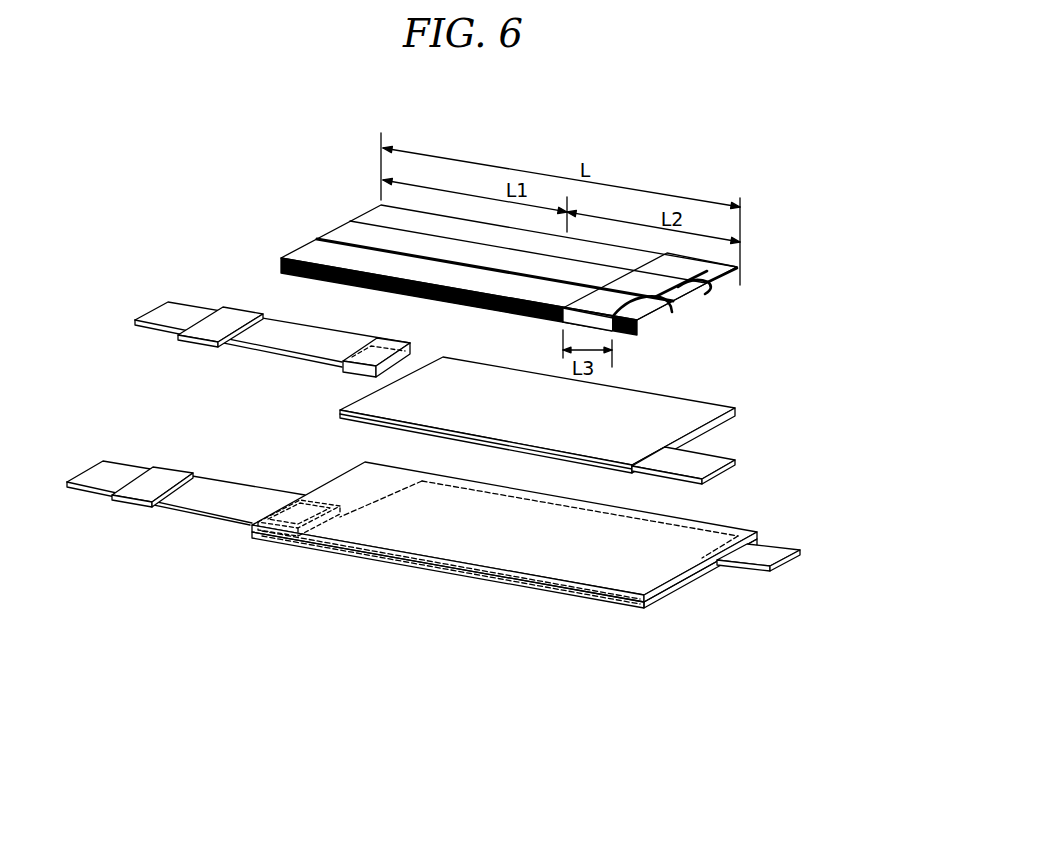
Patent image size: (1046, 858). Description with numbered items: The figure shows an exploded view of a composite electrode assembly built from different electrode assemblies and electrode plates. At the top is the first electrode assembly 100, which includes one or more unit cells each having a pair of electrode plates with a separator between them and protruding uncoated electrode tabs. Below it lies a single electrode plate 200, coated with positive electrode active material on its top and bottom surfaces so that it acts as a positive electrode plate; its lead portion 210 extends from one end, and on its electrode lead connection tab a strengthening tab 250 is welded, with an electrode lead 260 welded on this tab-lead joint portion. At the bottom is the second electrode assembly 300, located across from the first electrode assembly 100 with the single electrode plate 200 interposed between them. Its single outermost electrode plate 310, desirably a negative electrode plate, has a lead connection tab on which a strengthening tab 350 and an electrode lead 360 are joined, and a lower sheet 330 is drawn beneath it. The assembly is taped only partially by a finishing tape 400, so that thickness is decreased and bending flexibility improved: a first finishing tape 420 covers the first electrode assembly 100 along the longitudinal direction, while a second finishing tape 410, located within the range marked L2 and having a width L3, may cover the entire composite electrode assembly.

The first electrode assembly 100 is at (348, 194).
The finishing tape 400 is at (714, 296).
The second finishing tape 410 is at (596, 275).
The first finishing tape 420 is at (667, 270).
The single electrode plate 200 is at (322, 403).
The first protection member extension 210 is at (657, 408).
The strengthening tab 250 is at (358, 353).
The electrode lead 260 is at (161, 310).
The second electrode assembly 300 is at (294, 564).
The single outermost electrode plate 310 is at (672, 540).
The lower sheet 330 is at (685, 585).
The strengthening tab 350 is at (313, 503).
The electrode lead 360 is at (92, 468).